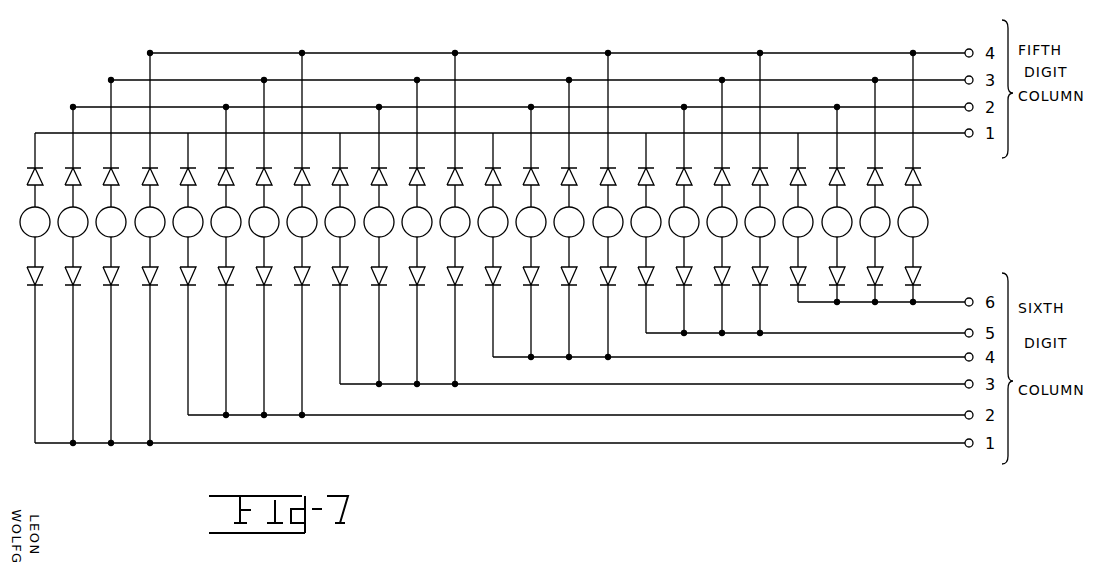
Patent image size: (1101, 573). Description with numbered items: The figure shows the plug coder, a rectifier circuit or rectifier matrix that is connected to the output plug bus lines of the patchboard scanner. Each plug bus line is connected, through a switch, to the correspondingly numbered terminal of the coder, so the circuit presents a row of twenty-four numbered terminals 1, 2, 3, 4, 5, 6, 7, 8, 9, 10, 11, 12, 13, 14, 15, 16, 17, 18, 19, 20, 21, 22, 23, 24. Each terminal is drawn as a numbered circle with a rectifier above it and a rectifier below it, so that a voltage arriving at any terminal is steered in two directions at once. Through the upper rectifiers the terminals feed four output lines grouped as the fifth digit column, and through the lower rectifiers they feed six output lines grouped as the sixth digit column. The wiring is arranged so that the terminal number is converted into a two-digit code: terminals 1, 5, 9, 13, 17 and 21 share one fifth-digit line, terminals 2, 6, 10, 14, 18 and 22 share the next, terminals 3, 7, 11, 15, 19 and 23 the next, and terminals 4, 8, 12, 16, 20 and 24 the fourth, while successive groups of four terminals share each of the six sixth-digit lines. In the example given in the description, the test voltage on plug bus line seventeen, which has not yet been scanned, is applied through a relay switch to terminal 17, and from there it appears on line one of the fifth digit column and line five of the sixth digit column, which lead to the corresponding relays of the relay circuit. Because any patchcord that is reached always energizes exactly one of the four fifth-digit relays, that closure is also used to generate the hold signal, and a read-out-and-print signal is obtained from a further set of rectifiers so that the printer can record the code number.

The terminal 1 is at (35, 288).
The terminal 2 is at (73, 275).
The terminal 3 is at (111, 262).
The terminal 4 is at (150, 248).
The terminal 5 is at (188, 274).
The terminal 6 is at (226, 261).
The terminal 7 is at (264, 248).
The terminal 8 is at (302, 234).
The terminal 9 is at (340, 258).
The terminal 10 is at (379, 246).
The terminal 11 is at (417, 232).
The terminal 12 is at (455, 219).
The terminal 13 is at (493, 245).
The terminal 14 is at (531, 232).
The terminal 15 is at (569, 219).
The terminal 16 is at (608, 205).
The terminal 17 is at (646, 233).
The terminal 18 is at (684, 220).
The terminal 19 is at (722, 207).
The terminal 20 is at (760, 193).
The terminal 21 is at (798, 217).
The terminal 22 is at (837, 205).
The terminal 23 is at (875, 191).
The terminal 24 is at (913, 178).